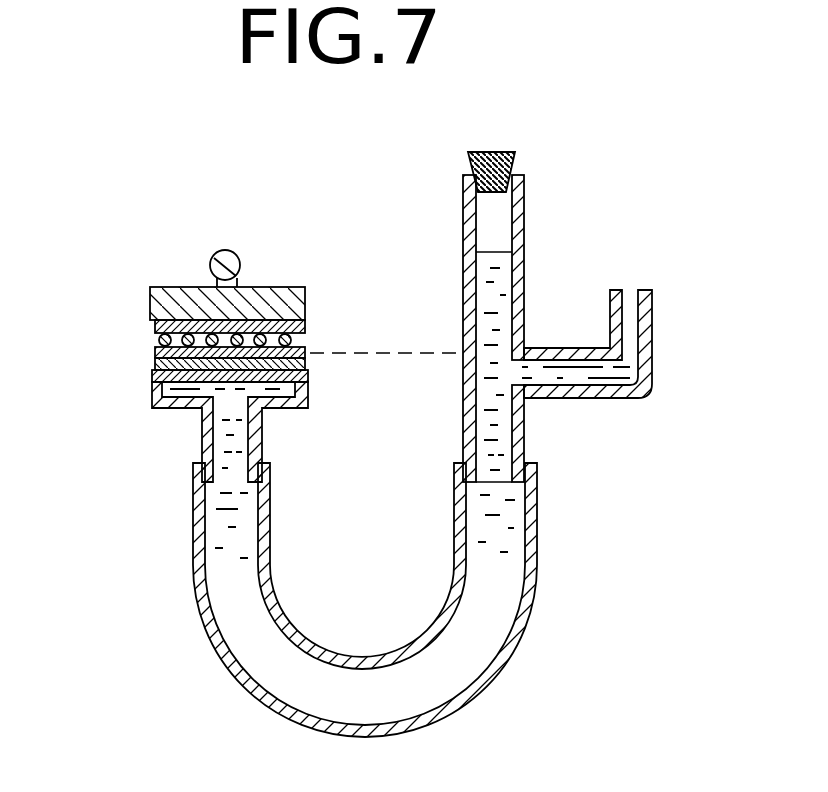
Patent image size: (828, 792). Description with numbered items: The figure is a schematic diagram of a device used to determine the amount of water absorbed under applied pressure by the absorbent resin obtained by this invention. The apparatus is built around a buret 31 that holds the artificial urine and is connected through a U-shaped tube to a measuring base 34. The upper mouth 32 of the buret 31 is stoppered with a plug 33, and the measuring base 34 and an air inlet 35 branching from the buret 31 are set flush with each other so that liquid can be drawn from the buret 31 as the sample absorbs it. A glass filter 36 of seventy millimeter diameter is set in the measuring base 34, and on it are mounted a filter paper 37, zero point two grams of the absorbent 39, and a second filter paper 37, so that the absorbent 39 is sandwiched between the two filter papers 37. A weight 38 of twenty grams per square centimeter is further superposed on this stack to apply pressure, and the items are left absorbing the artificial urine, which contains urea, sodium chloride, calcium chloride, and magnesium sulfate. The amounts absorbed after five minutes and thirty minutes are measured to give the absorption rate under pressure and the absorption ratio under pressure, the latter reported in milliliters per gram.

The buret 31 is at (465, 307).
The upper mouth 32 is at (524, 170).
The plug 33 is at (468, 162).
The measuring base 34 is at (155, 381).
The air inlet 35 is at (637, 321).
The glass filter 36 is at (155, 366).
The filter paper 37 is at (155, 323).
The weight 38 is at (305, 299).
The absorbent 39 is at (158, 339).